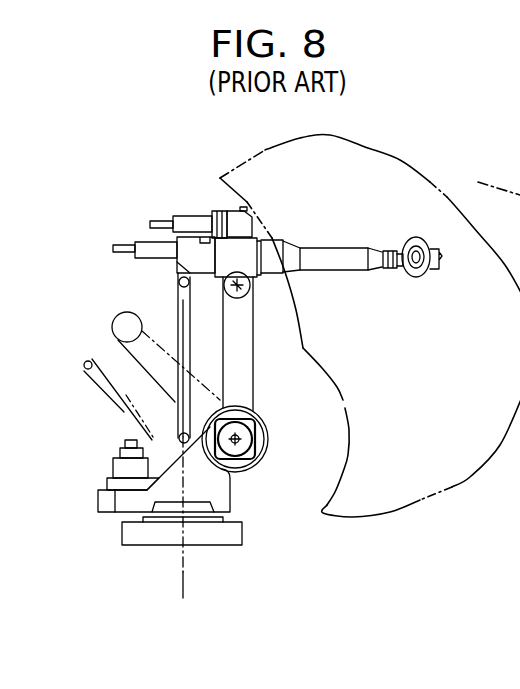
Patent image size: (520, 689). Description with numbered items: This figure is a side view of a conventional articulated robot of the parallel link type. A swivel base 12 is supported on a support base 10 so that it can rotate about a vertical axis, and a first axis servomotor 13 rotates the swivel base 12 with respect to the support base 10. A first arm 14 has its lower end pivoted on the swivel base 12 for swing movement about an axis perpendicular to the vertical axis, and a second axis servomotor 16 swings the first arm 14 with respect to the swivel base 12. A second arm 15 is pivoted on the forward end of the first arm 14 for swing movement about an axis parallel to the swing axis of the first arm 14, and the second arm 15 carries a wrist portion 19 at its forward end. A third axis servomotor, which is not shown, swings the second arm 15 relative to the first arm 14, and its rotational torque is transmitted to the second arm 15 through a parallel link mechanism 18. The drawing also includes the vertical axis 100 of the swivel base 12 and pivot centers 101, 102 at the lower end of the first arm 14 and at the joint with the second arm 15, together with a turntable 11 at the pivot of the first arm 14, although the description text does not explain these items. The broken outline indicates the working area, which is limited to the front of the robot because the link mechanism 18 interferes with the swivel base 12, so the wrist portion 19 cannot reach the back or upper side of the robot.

The support base 10 is at (232, 534).
The turntable 11 is at (263, 437).
The swivel base 12 is at (213, 491).
The first axis servomotor 13 is at (113, 470).
The first arm 14 is at (240, 356).
The second arm 15 is at (340, 249).
The second axis servomotor 16 is at (256, 455).
The parallel link mechanism 18 is at (170, 303).
The wrist portion 19 is at (403, 280).
The vertical axis 100 is at (185, 580).
The rotation center 101 is at (240, 434).
The pivot center 102 is at (249, 289).